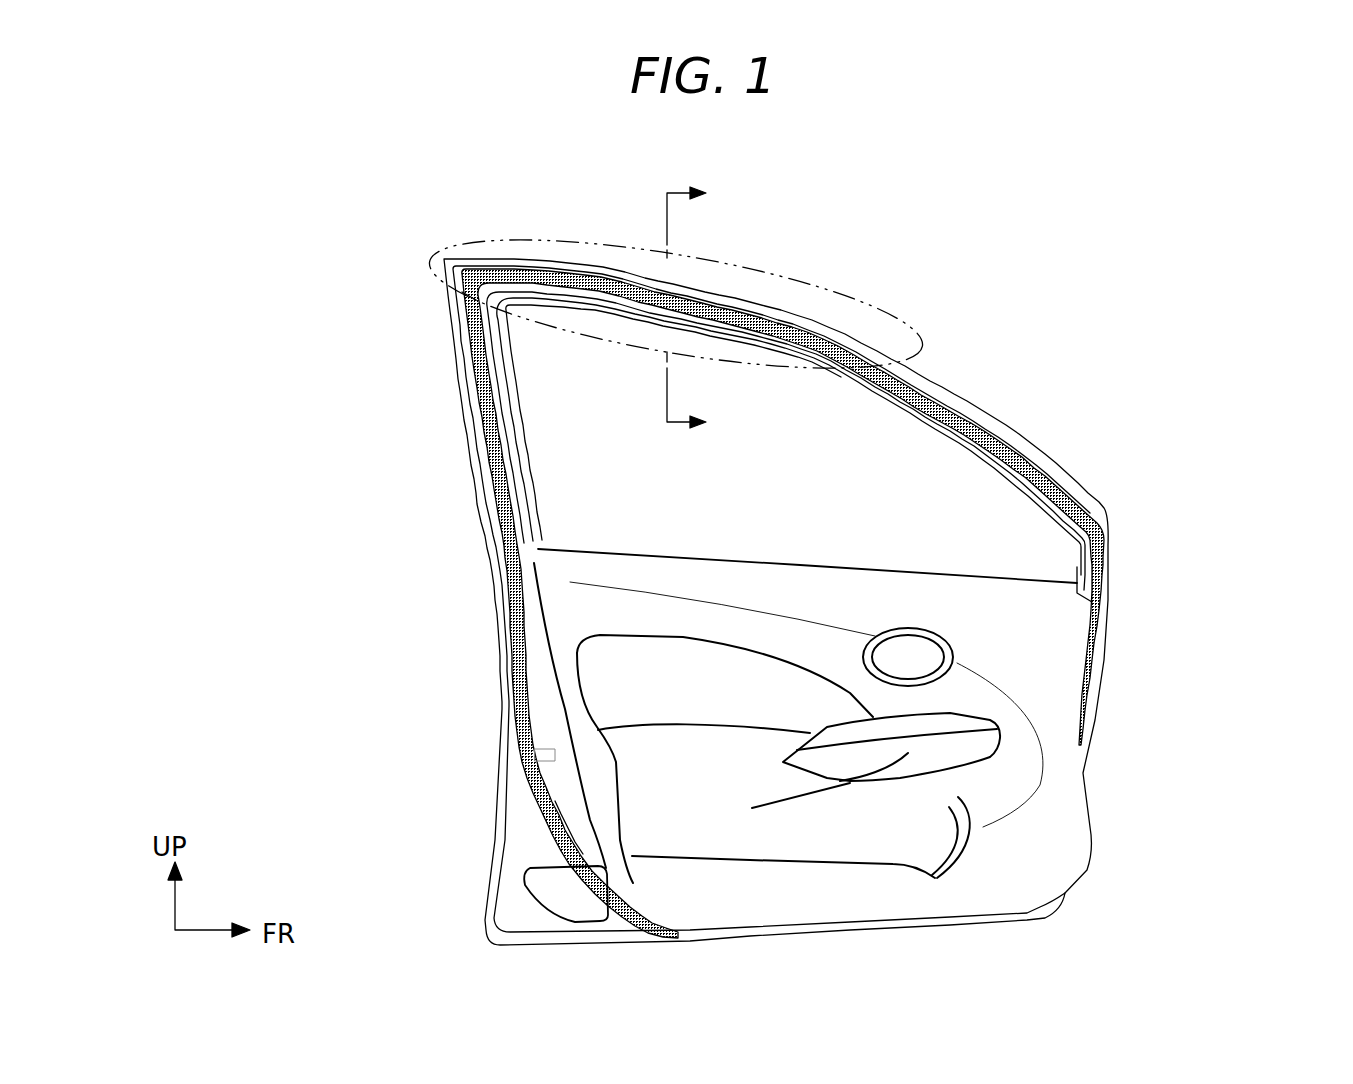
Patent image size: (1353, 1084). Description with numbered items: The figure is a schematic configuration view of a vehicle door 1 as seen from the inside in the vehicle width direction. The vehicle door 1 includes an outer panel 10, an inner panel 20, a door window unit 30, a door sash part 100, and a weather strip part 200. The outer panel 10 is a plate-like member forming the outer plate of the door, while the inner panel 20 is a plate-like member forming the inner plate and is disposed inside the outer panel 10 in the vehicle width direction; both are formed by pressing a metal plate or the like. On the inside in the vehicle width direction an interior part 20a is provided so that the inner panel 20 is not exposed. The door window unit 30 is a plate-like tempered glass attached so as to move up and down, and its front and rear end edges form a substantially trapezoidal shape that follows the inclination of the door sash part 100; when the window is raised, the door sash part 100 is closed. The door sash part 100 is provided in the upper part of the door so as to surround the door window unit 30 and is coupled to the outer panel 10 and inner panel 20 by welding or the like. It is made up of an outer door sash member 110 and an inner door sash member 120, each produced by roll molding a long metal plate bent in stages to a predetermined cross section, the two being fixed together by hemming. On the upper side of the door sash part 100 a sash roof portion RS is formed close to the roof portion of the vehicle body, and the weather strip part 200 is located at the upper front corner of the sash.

The vehicle door 1 is at (1109, 219).
The outer panel 10 is at (491, 608).
The inner panel 20 is at (513, 908).
The interior part 20a is at (1033, 650).
The door window unit 30 is at (583, 462).
The door sash part 100 is at (980, 390).
The outer door sash member 110 is at (468, 447).
The inner door sash member 120 is at (490, 503).
The weather strip part 200 is at (478, 284).
The sash roof portion RS is at (773, 270).